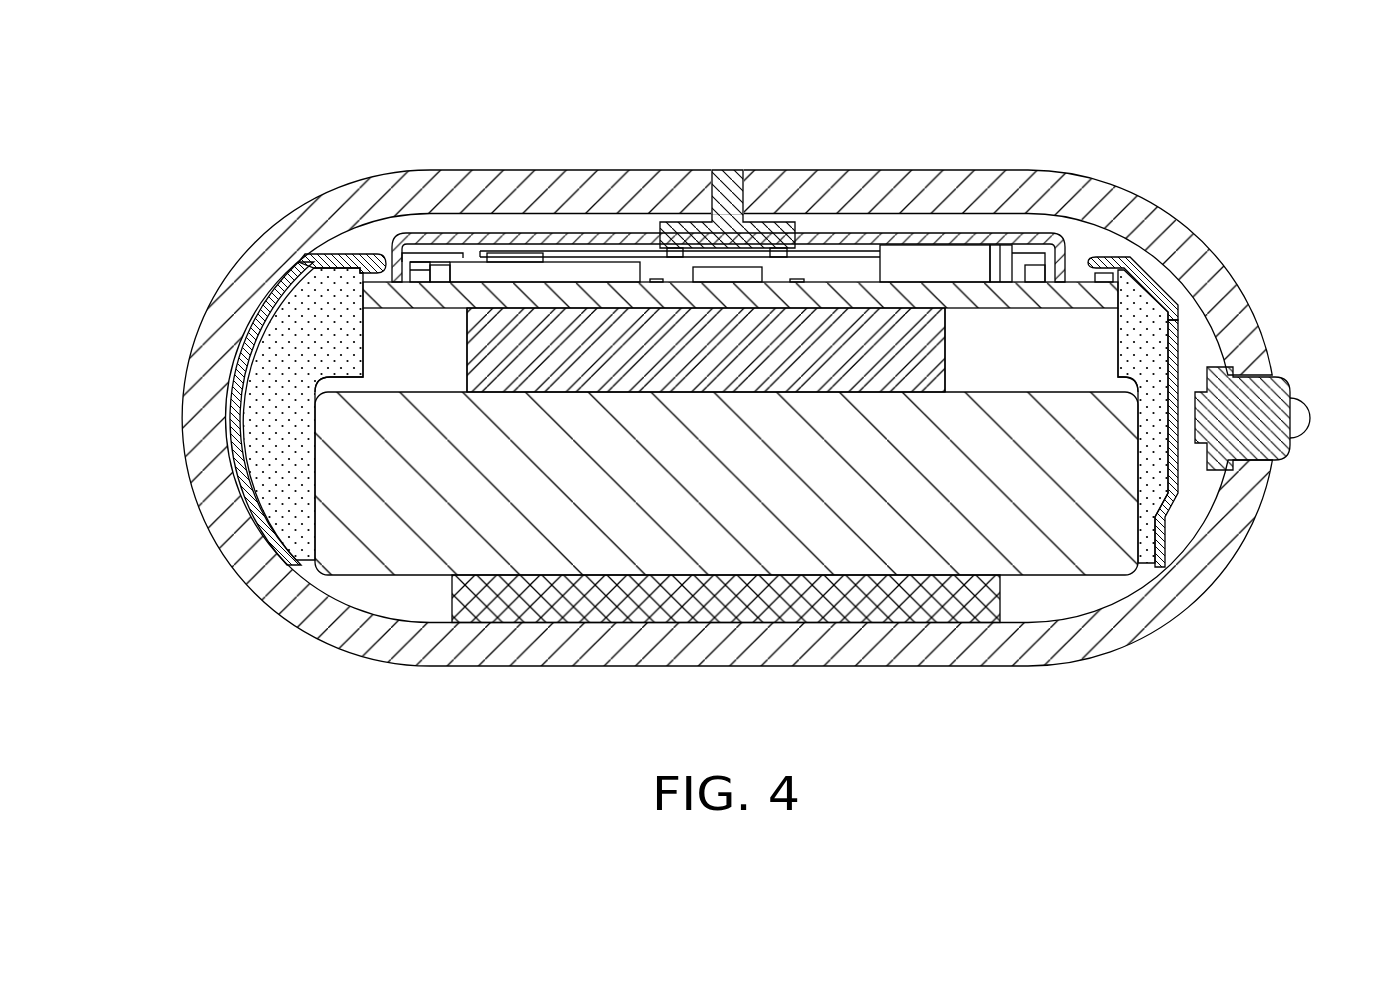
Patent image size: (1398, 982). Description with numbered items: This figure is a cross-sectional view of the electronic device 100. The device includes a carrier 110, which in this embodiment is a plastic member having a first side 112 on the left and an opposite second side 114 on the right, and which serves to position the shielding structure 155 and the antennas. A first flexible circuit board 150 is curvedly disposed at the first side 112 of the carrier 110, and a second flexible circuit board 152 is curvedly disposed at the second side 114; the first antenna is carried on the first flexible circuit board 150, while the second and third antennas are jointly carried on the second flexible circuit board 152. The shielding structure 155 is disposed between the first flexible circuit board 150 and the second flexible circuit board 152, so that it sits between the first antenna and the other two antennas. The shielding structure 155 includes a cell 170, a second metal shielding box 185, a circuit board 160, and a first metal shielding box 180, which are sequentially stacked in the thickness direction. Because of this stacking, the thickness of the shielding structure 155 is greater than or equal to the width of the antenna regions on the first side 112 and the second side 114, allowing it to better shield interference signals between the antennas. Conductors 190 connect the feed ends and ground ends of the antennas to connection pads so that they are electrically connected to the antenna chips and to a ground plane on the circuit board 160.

The electronic device 100 is at (1294, 109).
The carrier 110 is at (720, 415).
The first side 112 is at (278, 488).
The second side 114 is at (1157, 477).
The first flexible circuit board 150 is at (721, 414).
The second flexible circuit board 152 is at (1178, 330).
The shielding structure 155 is at (727, 339).
The circuit board 160 is at (1073, 293).
The cell 170 is at (970, 440).
The first metal shielding box 180 is at (1038, 229).
The second metal shielding box 185 is at (915, 345).
The conductors 190 is at (368, 277).